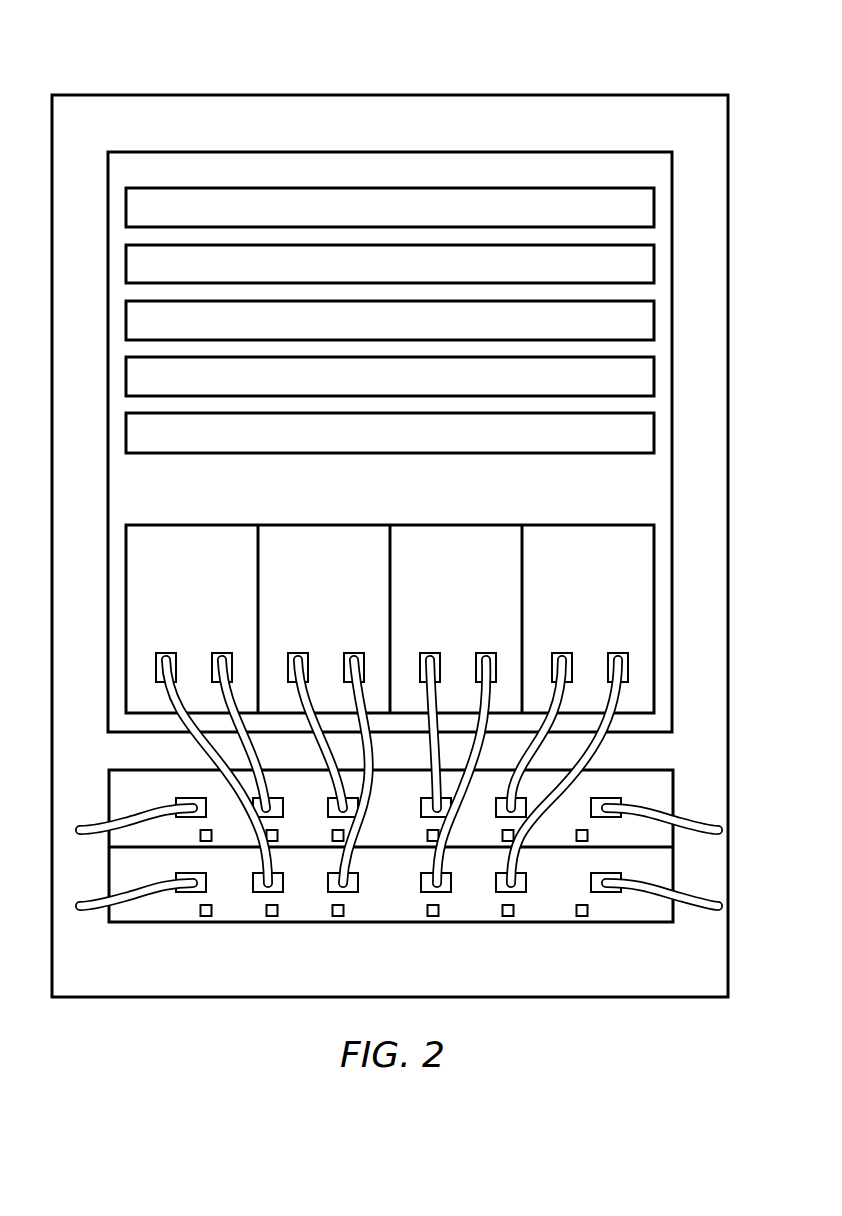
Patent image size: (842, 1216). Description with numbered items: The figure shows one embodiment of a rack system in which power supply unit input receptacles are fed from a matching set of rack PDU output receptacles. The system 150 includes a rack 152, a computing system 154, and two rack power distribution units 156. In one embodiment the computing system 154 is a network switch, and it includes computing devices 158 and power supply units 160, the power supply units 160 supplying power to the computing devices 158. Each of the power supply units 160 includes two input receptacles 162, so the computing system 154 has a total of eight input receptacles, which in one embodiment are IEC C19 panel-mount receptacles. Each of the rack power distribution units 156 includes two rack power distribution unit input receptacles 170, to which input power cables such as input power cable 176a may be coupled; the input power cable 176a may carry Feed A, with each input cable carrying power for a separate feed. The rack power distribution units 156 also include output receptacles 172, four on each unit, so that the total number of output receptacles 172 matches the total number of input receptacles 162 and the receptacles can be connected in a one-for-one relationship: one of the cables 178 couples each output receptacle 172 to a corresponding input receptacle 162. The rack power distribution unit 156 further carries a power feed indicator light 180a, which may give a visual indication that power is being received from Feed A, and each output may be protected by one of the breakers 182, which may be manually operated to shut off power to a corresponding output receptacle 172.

The system 150 is at (606, 73).
The rack 152 is at (724, 987).
The computing system 154 is at (149, 182).
The rack power distribution unit 156 is at (403, 925).
The computing device 158 is at (646, 218).
The power supply unit 160 is at (648, 556).
The input receptacle 162 is at (616, 652).
The rack power distribution unit input receptacle 170 is at (612, 895).
The output receptacle 172 is at (264, 895).
The input power cable 176a is at (97, 914).
The cable 178 is at (161, 747).
The power feed indicator light 180a is at (205, 918).
The breaker 182 is at (271, 918).